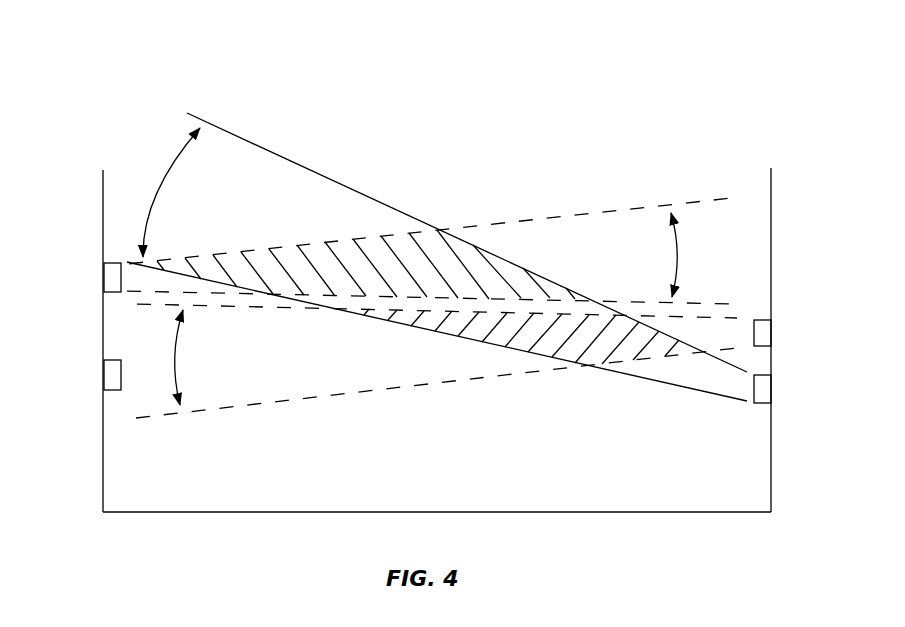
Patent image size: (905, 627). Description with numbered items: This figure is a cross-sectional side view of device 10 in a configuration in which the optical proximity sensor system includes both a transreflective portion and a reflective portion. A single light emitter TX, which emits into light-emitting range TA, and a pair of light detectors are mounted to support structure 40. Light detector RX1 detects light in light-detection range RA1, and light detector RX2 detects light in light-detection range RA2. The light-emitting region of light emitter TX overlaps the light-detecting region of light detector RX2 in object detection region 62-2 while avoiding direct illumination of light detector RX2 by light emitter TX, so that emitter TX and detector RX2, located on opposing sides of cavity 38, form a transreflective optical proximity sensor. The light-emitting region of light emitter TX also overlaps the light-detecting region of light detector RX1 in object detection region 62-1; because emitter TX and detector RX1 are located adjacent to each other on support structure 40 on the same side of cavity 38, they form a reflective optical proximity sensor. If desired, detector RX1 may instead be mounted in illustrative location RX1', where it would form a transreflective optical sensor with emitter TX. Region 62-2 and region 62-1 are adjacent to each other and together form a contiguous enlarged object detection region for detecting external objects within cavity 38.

The device 10 is at (669, 87).
The support structure 40 is at (772, 255).
The cavity 38 is at (580, 501).
The light detector RX2 is at (108, 278).
The illustrative location RX1' is at (72, 375).
The light detector RX1 is at (797, 331).
The light emitter TX is at (763, 390).
The light-emitting range TA is at (158, 182).
The light-detection range RA2 is at (677, 255).
The light-detection range RA1 is at (183, 347).
The object detection region 62-2 is at (345, 263).
The object detection region 62-1 is at (477, 331).